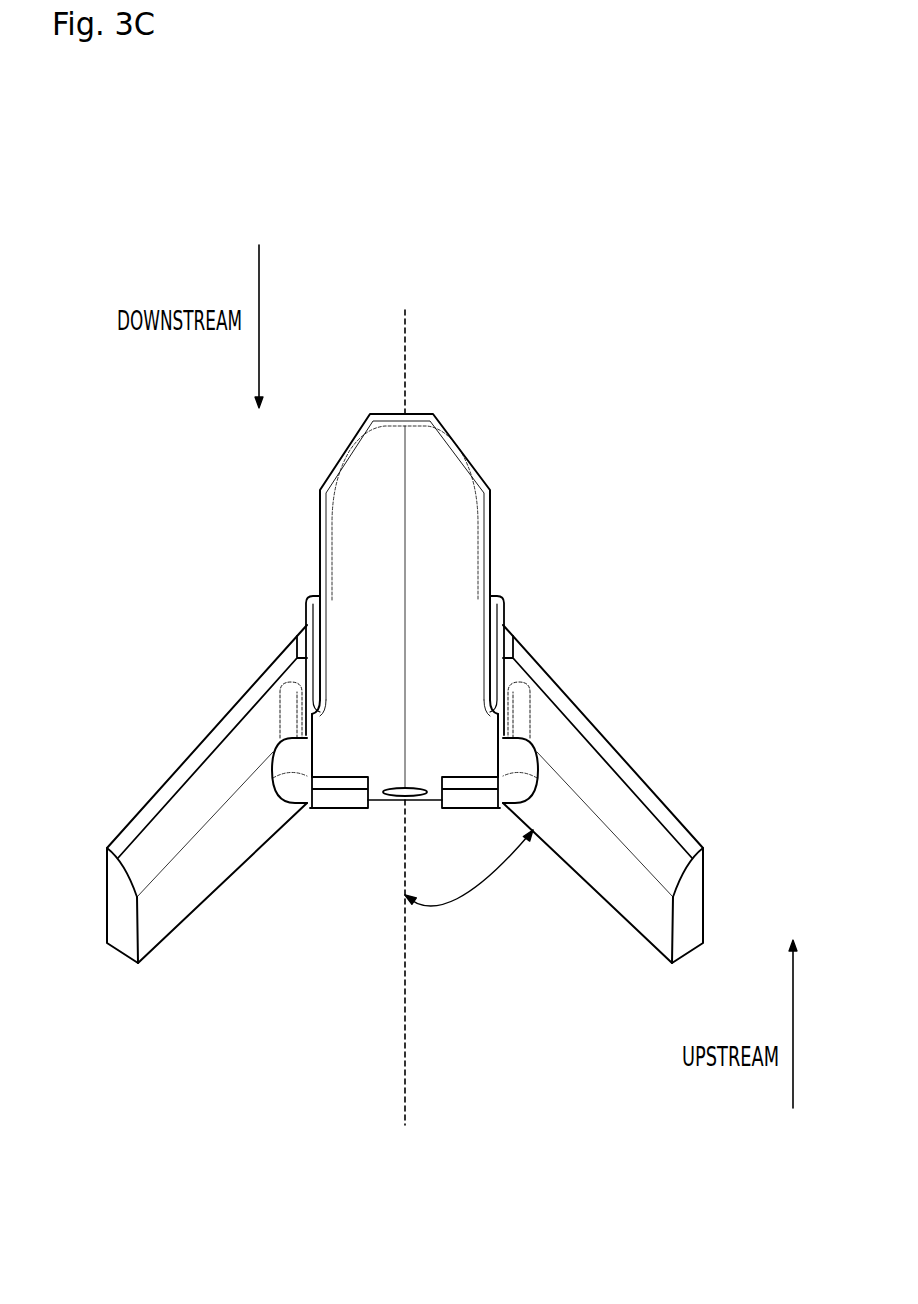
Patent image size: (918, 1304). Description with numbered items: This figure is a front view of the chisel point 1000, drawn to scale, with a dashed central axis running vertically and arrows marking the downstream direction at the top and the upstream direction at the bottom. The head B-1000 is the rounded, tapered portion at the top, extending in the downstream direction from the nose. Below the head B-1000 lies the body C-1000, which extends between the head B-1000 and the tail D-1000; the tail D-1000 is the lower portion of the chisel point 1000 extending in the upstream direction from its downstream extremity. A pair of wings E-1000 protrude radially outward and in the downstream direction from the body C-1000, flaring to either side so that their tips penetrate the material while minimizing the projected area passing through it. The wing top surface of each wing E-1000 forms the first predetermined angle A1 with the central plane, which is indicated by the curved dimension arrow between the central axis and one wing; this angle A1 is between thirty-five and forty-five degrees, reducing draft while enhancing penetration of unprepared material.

The chisel point 1000 is at (405, 643).
The head B-1000 is at (500, 526).
The body C-1000 is at (274, 606).
The tail D-1000 is at (375, 827).
The wing E-1000 is at (638, 650).
The first predetermined angle A1 is at (469, 874).